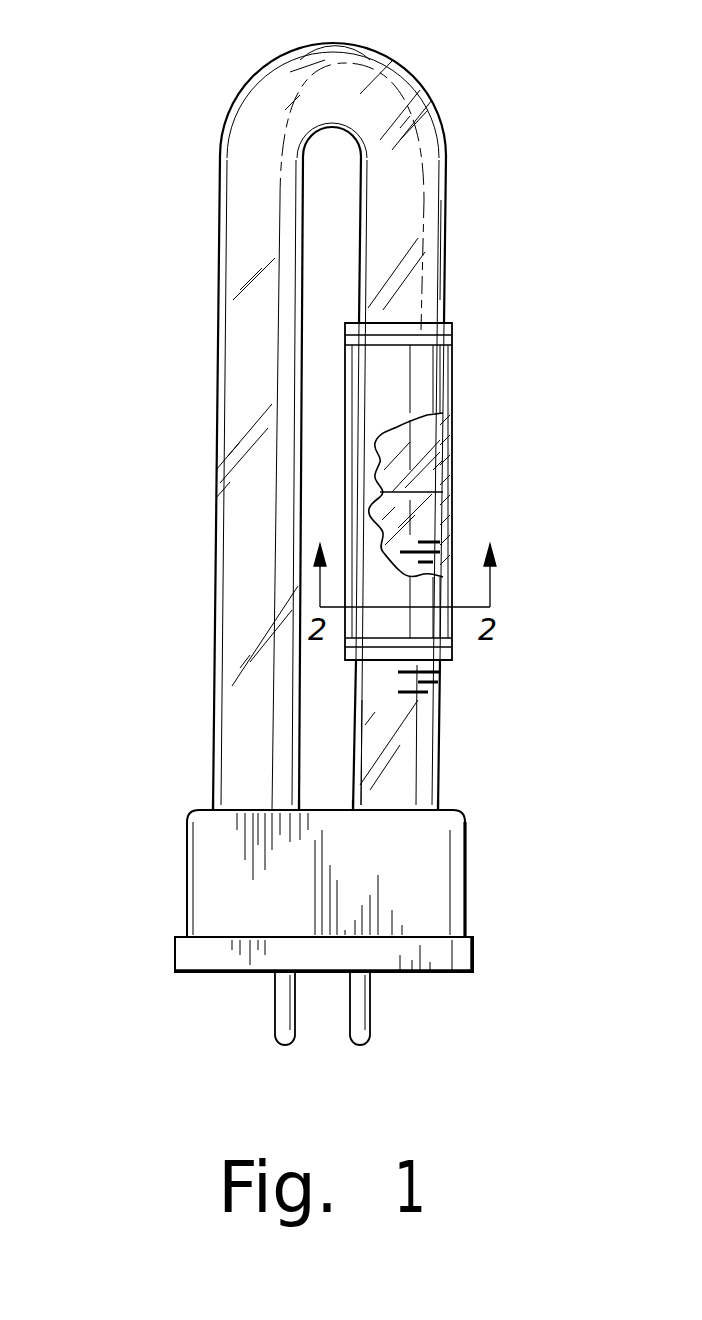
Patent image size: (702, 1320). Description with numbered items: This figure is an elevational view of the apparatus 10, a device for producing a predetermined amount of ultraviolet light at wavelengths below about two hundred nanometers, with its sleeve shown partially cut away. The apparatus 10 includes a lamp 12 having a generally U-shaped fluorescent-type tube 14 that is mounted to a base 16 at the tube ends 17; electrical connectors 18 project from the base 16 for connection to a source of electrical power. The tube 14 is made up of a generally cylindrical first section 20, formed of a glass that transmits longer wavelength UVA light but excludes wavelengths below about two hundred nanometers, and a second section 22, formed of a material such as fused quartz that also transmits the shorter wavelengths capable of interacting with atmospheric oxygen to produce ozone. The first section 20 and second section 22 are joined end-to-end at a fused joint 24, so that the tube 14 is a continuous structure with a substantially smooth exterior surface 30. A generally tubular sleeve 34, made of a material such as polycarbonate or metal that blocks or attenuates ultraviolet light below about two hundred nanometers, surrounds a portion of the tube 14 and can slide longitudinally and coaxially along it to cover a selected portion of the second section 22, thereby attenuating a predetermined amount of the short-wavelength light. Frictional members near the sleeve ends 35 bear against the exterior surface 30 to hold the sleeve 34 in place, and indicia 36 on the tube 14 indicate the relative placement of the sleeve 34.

The apparatus 10 is at (160, 507).
The lamp 12 is at (222, 187).
The tube 14 is at (336, 53).
The base 16 is at (197, 820).
The tube ends 17 is at (212, 807).
The electrical connectors 18 is at (283, 1046).
The first section 20 is at (428, 120).
The second section 22 is at (427, 772).
The fused joint 24 is at (423, 488).
The exterior surface 30 is at (447, 240).
The sleeve 34 is at (443, 375).
The sleeve ends 35 is at (453, 337).
The indicia 36 is at (447, 553).